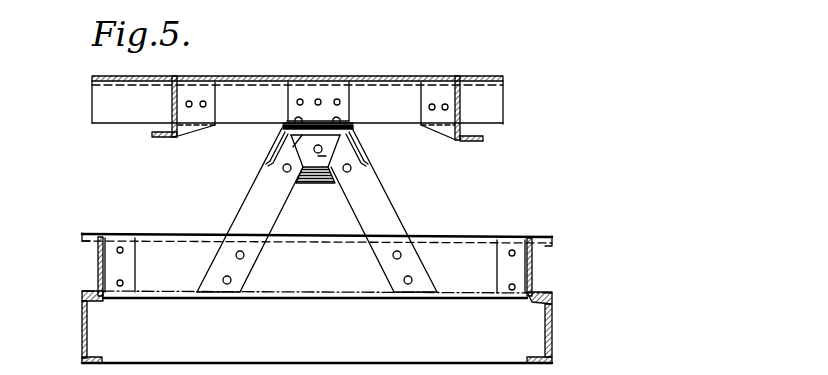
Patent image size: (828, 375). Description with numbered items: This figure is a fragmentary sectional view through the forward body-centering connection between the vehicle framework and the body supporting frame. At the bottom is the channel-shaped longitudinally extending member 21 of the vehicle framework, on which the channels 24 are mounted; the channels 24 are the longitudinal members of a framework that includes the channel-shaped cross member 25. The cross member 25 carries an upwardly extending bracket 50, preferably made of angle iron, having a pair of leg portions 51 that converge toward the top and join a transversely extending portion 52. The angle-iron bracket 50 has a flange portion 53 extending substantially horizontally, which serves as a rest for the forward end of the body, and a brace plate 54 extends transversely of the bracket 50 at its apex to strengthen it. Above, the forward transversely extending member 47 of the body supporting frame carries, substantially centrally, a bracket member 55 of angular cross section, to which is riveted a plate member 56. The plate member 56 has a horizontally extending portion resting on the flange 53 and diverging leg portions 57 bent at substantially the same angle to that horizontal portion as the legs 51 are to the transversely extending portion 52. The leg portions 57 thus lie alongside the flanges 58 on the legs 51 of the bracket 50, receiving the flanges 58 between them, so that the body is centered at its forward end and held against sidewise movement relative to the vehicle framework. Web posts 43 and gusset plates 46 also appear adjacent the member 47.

The longitudinally extending member 21 is at (82, 320).
The channel 24 is at (99, 270).
The cross member 25 is at (297, 255).
The web post 43 is at (172, 108).
The gusset plate 46 is at (188, 88).
The forward transversely extending member 47 is at (106, 105).
The bracket 50 is at (380, 198).
The leg portion 51 is at (252, 198).
The transversely extending portion 52 is at (322, 162).
The flange portion 53 is at (297, 143).
The brace plate 54 is at (312, 183).
The bracket member 55 is at (309, 93).
The plate member 56 is at (322, 123).
The leg portion 57 is at (281, 132).
The flange 58 is at (262, 182).